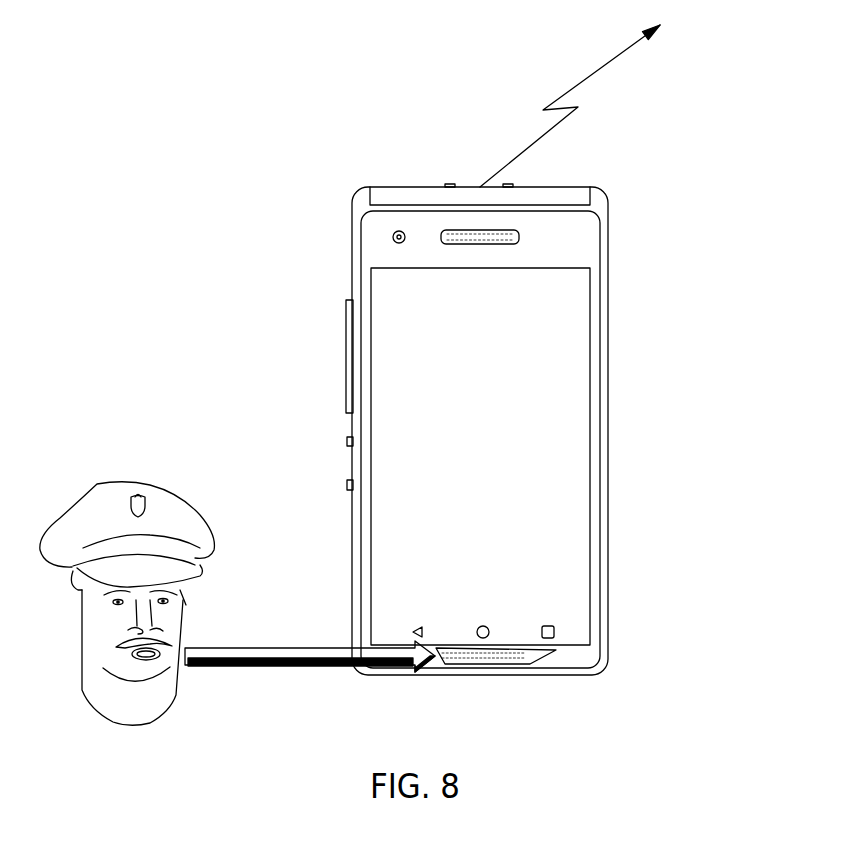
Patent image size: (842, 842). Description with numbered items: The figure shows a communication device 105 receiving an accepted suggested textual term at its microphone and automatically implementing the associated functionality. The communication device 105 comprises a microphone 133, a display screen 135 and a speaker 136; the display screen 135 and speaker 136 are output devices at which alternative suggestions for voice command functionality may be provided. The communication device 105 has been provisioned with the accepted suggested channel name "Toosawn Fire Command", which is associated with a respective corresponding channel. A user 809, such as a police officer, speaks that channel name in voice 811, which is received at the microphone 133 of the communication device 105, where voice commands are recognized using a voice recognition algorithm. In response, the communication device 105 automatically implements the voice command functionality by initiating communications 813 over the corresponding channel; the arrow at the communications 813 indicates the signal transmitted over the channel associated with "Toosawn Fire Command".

The communication device 105 is at (406, 186).
The speaker 136 is at (520, 240).
The display screen 135 is at (415, 478).
The microphone 133 is at (480, 666).
The communications 813 is at (598, 70).
The voice 811 is at (273, 642).
The user 809 is at (82, 665).